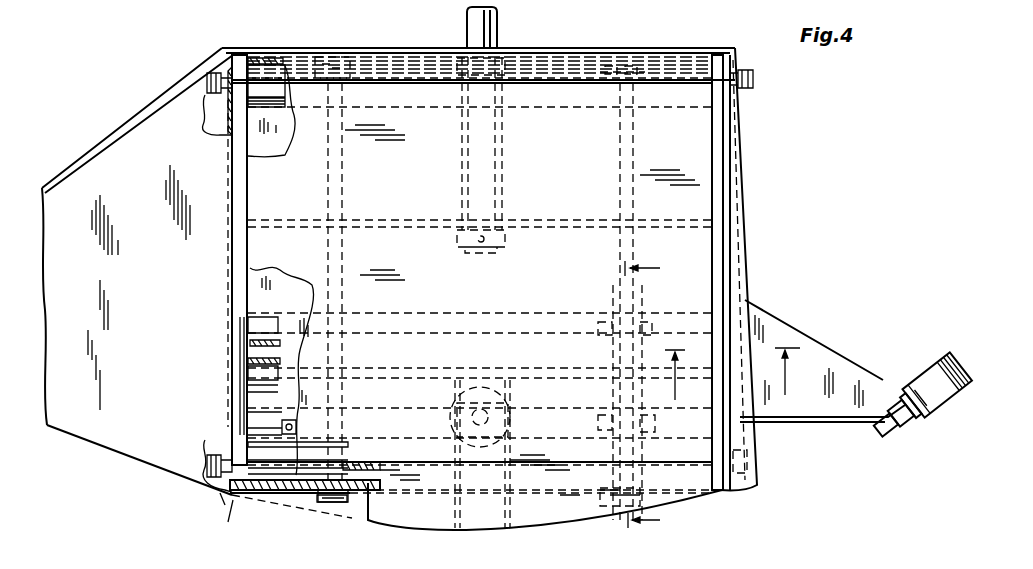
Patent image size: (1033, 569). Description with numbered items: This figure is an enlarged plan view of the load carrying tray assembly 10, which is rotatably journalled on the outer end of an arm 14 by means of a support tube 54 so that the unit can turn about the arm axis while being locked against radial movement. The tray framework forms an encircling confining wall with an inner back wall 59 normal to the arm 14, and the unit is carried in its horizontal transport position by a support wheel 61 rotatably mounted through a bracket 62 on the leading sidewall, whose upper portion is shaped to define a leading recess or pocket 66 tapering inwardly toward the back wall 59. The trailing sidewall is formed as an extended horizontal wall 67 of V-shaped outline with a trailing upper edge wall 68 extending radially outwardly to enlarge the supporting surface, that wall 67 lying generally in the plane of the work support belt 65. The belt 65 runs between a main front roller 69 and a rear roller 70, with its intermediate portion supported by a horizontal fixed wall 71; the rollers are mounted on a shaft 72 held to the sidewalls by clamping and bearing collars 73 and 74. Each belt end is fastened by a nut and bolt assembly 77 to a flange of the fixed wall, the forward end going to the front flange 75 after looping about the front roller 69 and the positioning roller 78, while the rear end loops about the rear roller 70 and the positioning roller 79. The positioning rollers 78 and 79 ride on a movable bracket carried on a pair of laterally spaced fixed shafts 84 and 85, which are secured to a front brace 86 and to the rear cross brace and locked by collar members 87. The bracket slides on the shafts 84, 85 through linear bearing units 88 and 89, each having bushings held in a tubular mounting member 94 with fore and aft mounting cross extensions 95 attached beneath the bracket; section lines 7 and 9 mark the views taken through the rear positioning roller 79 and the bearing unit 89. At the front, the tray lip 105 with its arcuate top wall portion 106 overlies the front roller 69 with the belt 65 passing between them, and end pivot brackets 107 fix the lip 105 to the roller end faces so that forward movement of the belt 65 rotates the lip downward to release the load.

The tray assembly 10 is at (778, 212).
The arm 14 is at (500, 28).
The support tube 54 is at (503, 145).
The back wall 59 is at (698, 50).
The support wheel 61 is at (898, 440).
The bracket 62 is at (850, 372).
The work support belt 65 is at (268, 240).
The leading recess or pocket 66 is at (745, 283).
The extended horizontal wall 67 is at (172, 311).
The trailing upper edge wall 68 is at (96, 158).
The main front roller 69 is at (272, 493).
The rear roller 70 is at (293, 103).
The horizontal fixed wall 71 is at (312, 282).
The shaft 72 is at (230, 525).
The clamping and bearing collar 73 is at (210, 480).
The clamping and bearing collar 74 is at (748, 483).
The front flange 75 is at (290, 448).
The nut and bolt assembly 77 is at (296, 428).
The positioning roller 78 is at (260, 385).
The positioning roller 79 is at (252, 345).
The fixed shaft 84 is at (345, 200).
The fixed shaft 85 is at (618, 243).
The front brace 86 is at (308, 492).
The collar member 87 is at (350, 62).
The linear bearing unit 88 is at (380, 412).
The linear bearing unit 89 is at (610, 355).
The tubular mounting member 94 is at (606, 296).
The mounting cross extension 95 is at (655, 318).
The front tray lip 105 is at (380, 466).
The arcuate top wall portion 106 is at (430, 520).
The end pivot bracket 107 is at (242, 398).
The section line 7 is at (732, 383).
The section line 9 is at (649, 395).